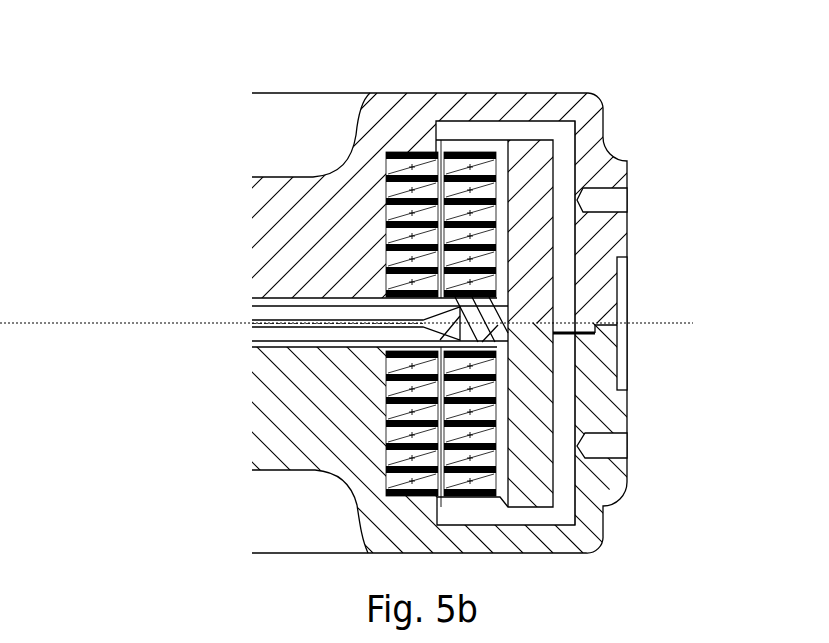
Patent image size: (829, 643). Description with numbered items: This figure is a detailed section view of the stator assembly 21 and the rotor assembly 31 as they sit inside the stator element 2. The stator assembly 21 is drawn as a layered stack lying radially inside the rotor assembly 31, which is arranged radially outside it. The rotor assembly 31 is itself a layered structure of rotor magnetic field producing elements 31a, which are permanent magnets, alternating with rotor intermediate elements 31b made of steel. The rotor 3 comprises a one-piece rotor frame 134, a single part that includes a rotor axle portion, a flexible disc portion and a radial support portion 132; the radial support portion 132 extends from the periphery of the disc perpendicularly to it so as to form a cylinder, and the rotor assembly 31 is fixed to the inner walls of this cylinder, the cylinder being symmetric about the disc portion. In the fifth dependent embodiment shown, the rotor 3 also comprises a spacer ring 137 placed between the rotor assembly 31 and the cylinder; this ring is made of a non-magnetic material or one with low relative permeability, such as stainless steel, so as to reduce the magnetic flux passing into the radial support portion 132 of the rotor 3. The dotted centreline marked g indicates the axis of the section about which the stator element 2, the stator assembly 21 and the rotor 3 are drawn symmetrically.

The stator element 2 is at (316, 452).
The rotor 3 is at (627, 311).
The radial support portion 132 is at (558, 168).
The spacer ring 137 is at (513, 158).
The stator assembly 21 is at (394, 152).
The rotor assembly 31 is at (457, 255).
The rotor magnetic field producing elements 31a is at (449, 152).
The rotor intermediate elements 31b is at (478, 160).
The one-piece rotor frame 134 is at (250, 322).
The axis g is at (356, 324).